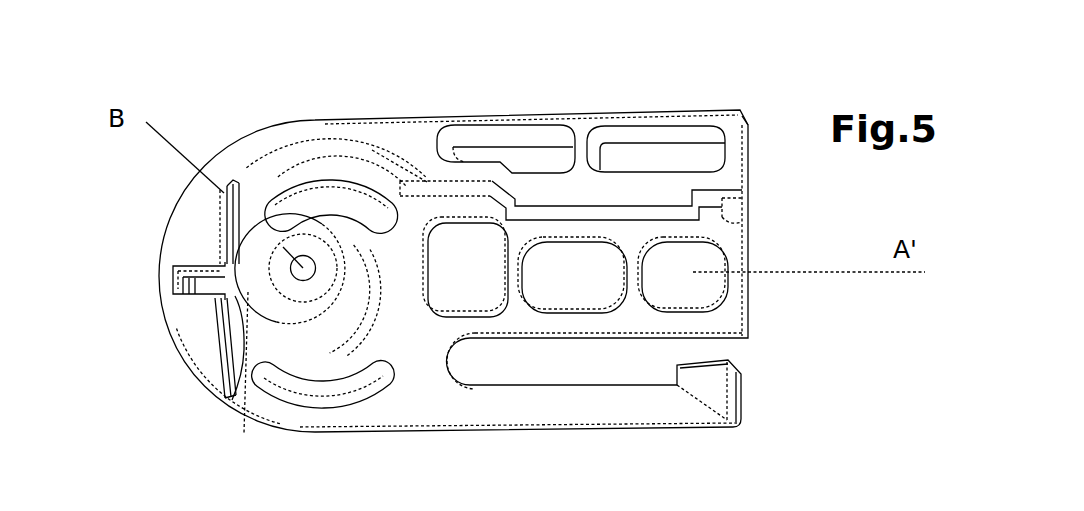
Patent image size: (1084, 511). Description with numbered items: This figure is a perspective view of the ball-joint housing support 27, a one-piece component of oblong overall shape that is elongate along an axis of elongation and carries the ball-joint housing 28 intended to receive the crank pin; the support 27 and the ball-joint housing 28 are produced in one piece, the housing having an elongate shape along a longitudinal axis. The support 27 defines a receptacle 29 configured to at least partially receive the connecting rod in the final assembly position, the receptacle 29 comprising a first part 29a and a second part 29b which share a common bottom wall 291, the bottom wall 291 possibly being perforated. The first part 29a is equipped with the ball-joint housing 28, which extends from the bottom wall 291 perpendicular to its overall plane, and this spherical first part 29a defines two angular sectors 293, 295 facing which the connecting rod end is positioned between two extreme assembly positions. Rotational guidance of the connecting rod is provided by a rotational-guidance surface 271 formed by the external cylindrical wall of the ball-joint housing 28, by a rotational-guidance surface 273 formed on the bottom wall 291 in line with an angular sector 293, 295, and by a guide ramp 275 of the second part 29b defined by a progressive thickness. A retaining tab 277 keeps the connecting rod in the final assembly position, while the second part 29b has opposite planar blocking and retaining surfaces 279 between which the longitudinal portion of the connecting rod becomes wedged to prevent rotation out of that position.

The ball-joint housing support 27 is at (272, 92).
The ball-joint housing 28 is at (327, 300).
The receptacle 29 is at (465, 200).
The first part of the receptacle 29a is at (402, 343).
The second part of the receptacle 29b is at (558, 227).
The rotational-guidance surface 271 is at (368, 188).
The rotational-guidance surface 273 is at (277, 182).
The guide ramp 275 is at (700, 410).
The retaining tab 277 is at (205, 236).
The blocking and retaining surfaces 279 is at (720, 200).
The bottom wall 291 is at (733, 243).
The angular sector 293 is at (313, 147).
The angular sector 295 is at (165, 272).